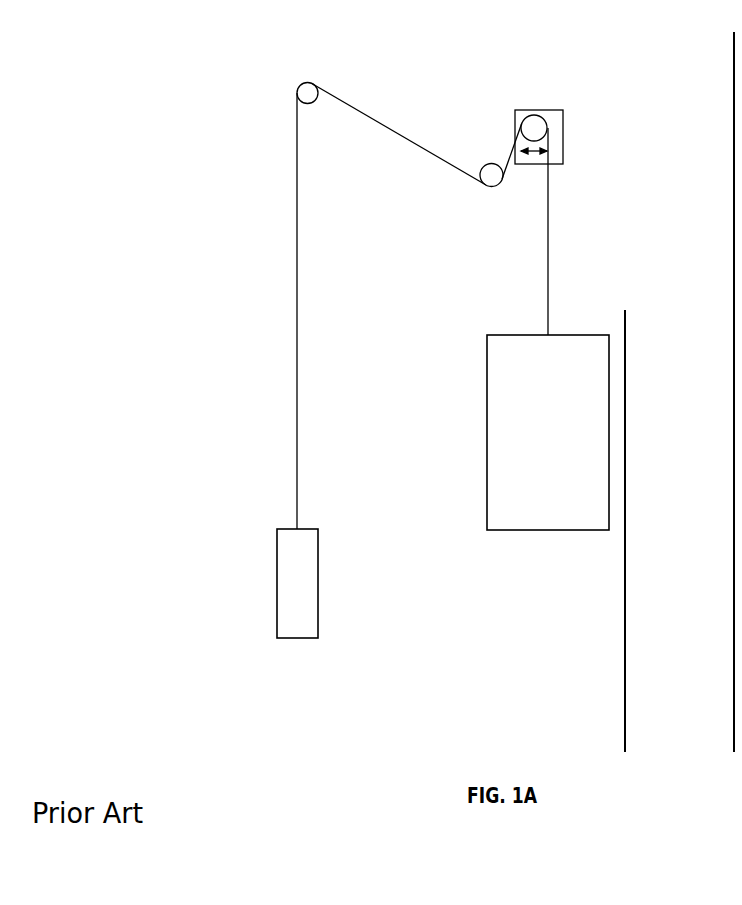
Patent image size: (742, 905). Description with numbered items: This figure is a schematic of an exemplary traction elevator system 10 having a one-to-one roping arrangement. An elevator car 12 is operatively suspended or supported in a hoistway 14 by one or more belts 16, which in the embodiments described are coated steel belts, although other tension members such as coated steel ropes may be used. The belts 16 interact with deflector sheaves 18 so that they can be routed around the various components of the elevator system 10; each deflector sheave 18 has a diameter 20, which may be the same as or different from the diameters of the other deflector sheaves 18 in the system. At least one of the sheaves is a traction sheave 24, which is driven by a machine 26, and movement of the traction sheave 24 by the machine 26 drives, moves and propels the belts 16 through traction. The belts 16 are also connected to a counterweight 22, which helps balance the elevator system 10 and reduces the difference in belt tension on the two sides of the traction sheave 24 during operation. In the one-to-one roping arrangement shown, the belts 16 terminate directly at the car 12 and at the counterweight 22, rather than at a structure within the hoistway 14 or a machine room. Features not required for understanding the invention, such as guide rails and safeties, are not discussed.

The elevator system 10 is at (637, 81).
The elevator car 12 is at (538, 442).
The hoistway 14 is at (627, 462).
The belt 16 is at (413, 144).
The deflector sheave 18 is at (301, 82).
The diameter 20 is at (534, 157).
The counterweight 22 is at (287, 592).
The traction sheave 24 is at (544, 118).
The machine 26 is at (527, 110).